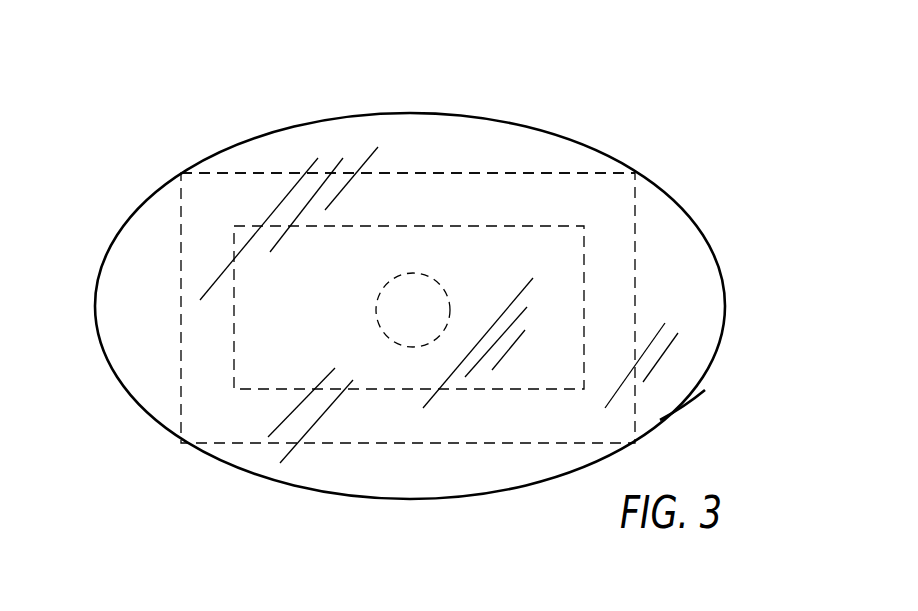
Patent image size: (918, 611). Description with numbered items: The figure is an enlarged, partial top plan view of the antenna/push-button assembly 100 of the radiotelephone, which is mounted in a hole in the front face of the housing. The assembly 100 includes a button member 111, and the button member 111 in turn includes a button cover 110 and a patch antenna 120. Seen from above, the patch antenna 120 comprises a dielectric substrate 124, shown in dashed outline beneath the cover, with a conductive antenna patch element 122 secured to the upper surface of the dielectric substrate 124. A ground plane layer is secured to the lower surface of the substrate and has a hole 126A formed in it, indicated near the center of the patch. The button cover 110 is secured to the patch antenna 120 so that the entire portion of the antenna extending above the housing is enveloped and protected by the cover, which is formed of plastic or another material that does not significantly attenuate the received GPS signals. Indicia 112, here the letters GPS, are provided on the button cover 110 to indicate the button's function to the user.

The antenna/push-button assembly 100 is at (650, 135).
The button cover 110 is at (685, 268).
The button member 111 is at (696, 397).
The indicia 112 is at (389, 380).
The patch antenna 120 is at (166, 386).
The conductive antenna patch element 122 is at (584, 248).
The dielectric substrate 124 is at (500, 173).
The hole 126A is at (420, 272).